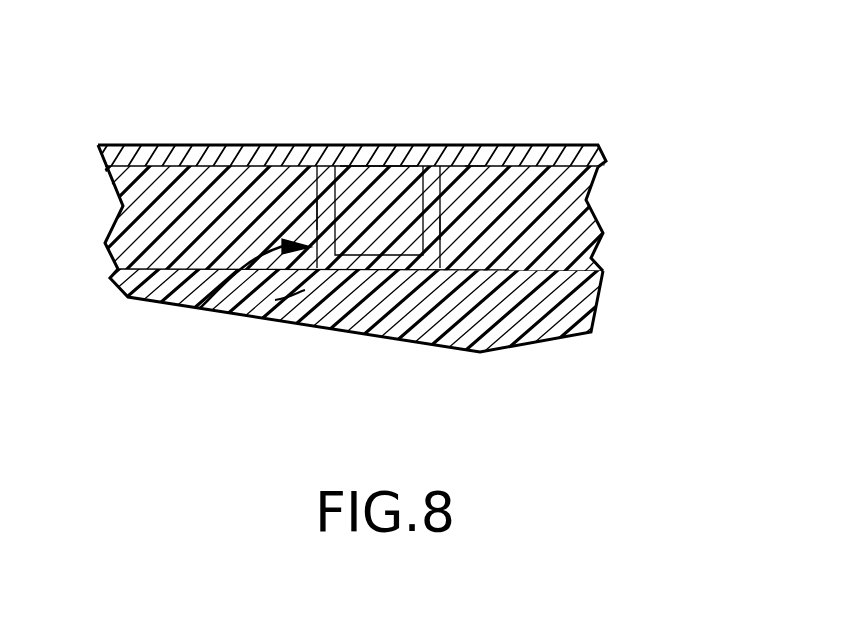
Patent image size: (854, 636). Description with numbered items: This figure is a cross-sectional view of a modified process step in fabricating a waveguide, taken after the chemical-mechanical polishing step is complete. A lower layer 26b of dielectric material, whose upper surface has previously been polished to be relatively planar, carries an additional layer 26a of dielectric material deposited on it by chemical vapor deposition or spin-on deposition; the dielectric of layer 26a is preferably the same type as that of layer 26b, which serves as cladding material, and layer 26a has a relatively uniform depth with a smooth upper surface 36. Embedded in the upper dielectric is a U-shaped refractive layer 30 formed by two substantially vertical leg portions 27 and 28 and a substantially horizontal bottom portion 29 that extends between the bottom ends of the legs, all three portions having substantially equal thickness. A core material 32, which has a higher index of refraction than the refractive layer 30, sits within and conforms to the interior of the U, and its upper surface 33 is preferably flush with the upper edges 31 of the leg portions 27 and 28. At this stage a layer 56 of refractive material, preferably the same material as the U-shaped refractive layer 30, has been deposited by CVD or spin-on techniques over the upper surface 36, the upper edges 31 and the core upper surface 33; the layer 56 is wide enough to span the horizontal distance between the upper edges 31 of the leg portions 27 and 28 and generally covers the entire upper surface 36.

The additional layer of dielectric material 26a is at (567, 202).
The lower layer of dielectric material 26b is at (575, 308).
The upper surface 36 is at (174, 162).
The upper edges 31 is at (333, 167).
The core material 32 is at (382, 210).
The upper surface 33 is at (400, 172).
The leg portion 27 is at (318, 214).
The layer of refractive material 56 is at (475, 166).
The leg portion 28 is at (430, 227).
The U-shaped refractive layer 30 is at (200, 308).
The bottom portion 29 is at (275, 300).